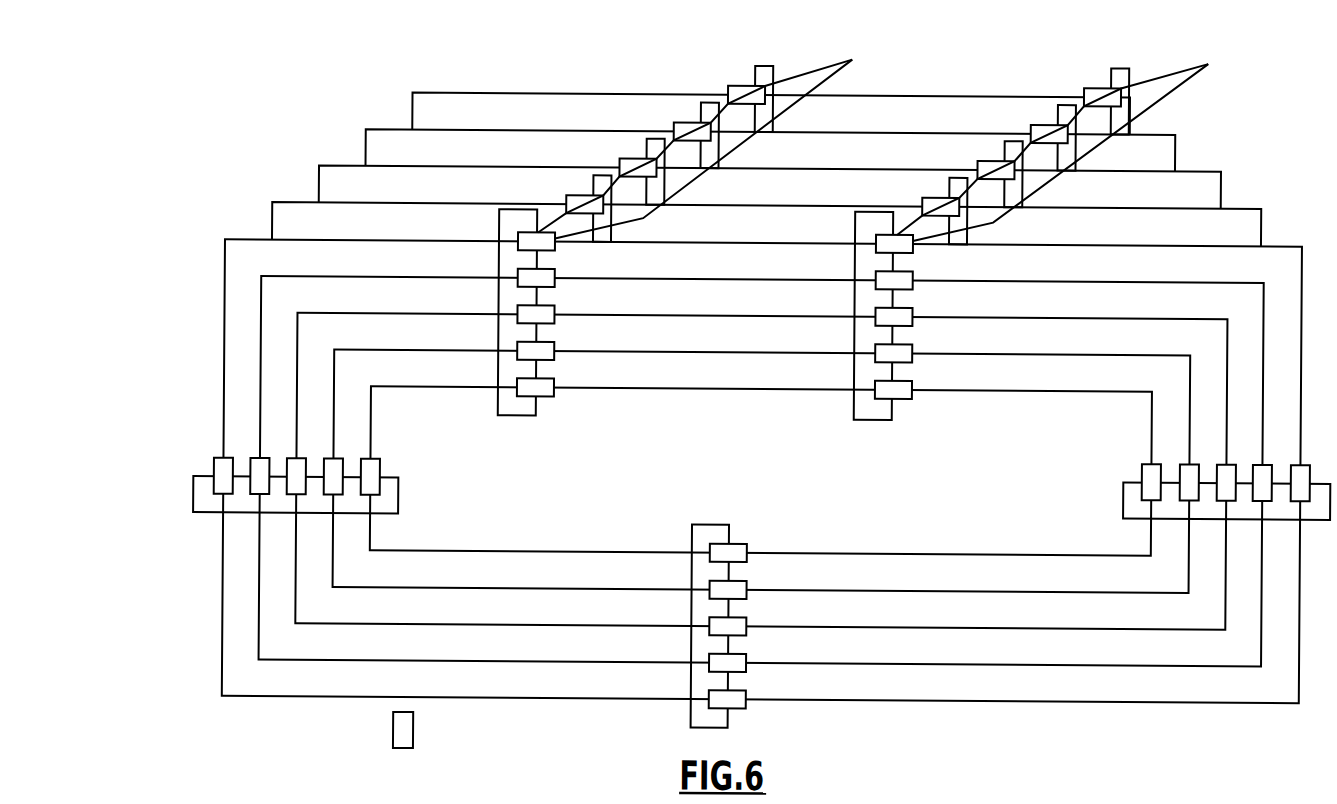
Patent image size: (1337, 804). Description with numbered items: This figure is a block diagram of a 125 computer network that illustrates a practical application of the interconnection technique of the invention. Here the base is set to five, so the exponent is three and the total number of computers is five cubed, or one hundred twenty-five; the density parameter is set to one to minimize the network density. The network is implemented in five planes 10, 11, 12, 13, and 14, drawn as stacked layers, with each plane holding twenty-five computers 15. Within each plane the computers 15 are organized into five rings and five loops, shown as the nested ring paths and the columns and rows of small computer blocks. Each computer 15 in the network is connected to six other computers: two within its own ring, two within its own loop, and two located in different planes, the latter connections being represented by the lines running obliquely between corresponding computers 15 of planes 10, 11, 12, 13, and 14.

The plane 10 is at (250, 243).
The plane 11 is at (300, 206).
The plane 12 is at (343, 168).
The plane 13 is at (388, 132).
The plane 14 is at (437, 95).
The computer 15 is at (738, 86).
The computer network 125 is at (762, 407).